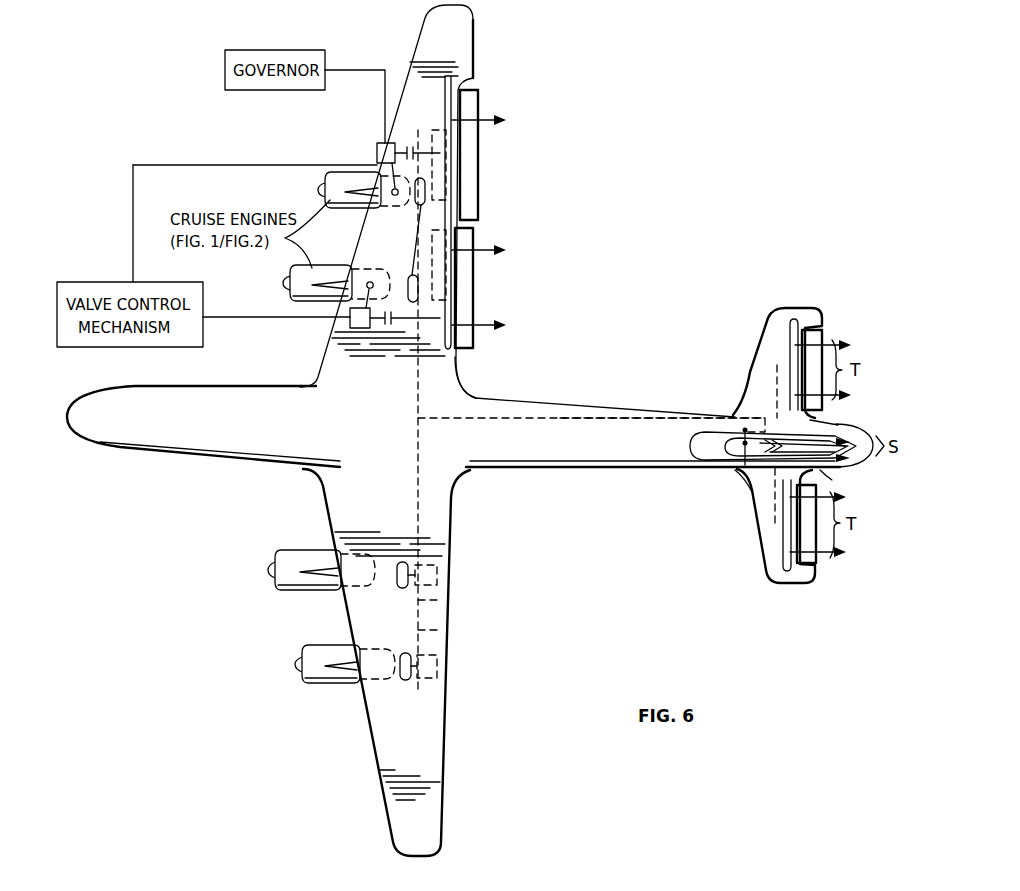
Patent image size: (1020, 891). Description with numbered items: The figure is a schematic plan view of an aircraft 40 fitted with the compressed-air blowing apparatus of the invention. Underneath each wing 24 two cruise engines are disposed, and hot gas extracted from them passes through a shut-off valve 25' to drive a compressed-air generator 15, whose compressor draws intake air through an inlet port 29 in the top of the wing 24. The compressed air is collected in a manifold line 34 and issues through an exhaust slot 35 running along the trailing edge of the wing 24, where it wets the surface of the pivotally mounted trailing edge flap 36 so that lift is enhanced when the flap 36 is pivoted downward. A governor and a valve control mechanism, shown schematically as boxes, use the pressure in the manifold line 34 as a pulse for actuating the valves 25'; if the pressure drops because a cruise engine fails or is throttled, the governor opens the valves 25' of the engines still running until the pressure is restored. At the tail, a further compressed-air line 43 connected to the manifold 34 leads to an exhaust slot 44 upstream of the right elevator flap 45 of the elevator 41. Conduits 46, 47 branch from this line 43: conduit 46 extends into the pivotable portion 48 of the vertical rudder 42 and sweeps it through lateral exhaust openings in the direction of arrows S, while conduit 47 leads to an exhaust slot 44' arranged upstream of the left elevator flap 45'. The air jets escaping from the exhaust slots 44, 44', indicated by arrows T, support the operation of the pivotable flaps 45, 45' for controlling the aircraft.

The wing 24 is at (452, 37).
The trailing edge flap 36 is at (478, 104).
The exhaust slot 35 is at (447, 88).
The compressed-air manifold line 34 is at (455, 148).
The compressed-air generator 15 is at (450, 190).
The shut-off valve 25' is at (286, 212).
The inlet port 29 is at (417, 252).
The aircraft 40 is at (468, 376).
The compressed-air line 43 is at (562, 422).
The elevator 41 is at (755, 370).
The exhaust slot 44 is at (768, 361).
The exhaust slot 44' is at (761, 538).
The right elevator flap 45 is at (832, 356).
The left elevator flap 45' is at (817, 550).
The vertical rudder 42 is at (718, 452).
The conduit 46 is at (763, 430).
The conduit 47 is at (750, 480).
The pivotable portion of the vertical rudder 48 is at (822, 474).